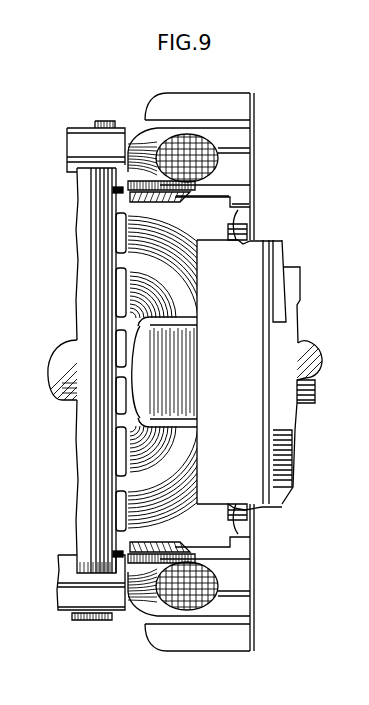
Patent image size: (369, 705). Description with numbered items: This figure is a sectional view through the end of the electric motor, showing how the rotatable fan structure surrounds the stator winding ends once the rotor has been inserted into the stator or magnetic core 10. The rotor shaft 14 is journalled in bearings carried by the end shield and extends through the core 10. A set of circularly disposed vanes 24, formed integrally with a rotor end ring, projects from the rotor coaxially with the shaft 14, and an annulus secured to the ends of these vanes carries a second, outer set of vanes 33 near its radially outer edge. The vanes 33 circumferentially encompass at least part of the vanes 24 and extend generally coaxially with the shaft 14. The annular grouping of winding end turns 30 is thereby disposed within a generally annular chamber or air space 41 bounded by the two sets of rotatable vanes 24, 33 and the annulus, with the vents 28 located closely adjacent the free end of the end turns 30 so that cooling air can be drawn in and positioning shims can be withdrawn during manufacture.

The magnetic core 10 is at (82, 235).
The rotor shaft 14 is at (300, 343).
The vanes 24 is at (215, 233).
The vents 28 is at (255, 187).
The winding end turns 30 is at (140, 150).
The vanes 33 is at (253, 103).
The annular chamber 41 is at (236, 200).